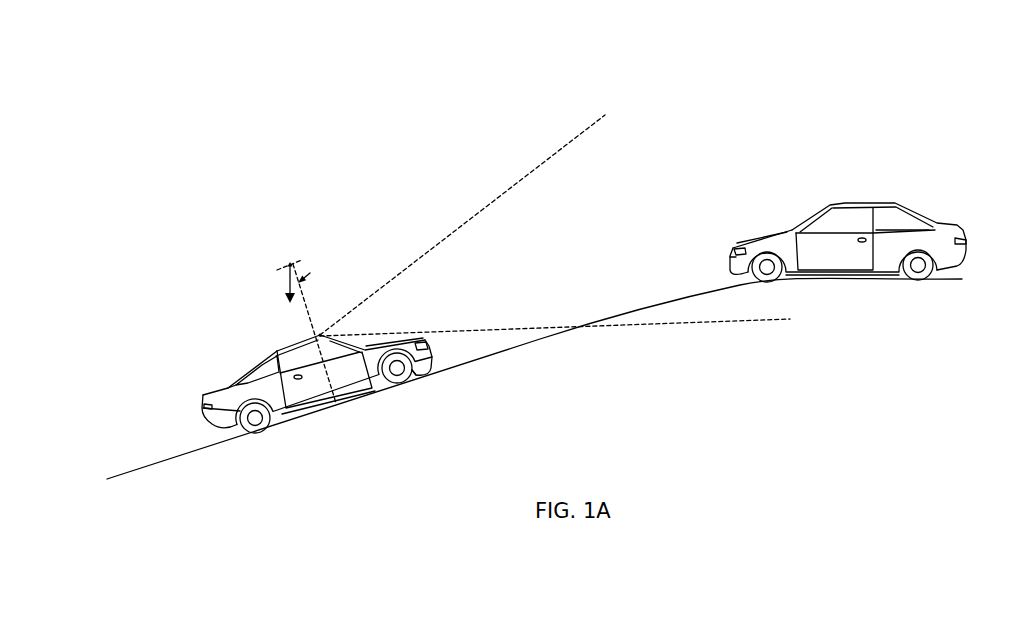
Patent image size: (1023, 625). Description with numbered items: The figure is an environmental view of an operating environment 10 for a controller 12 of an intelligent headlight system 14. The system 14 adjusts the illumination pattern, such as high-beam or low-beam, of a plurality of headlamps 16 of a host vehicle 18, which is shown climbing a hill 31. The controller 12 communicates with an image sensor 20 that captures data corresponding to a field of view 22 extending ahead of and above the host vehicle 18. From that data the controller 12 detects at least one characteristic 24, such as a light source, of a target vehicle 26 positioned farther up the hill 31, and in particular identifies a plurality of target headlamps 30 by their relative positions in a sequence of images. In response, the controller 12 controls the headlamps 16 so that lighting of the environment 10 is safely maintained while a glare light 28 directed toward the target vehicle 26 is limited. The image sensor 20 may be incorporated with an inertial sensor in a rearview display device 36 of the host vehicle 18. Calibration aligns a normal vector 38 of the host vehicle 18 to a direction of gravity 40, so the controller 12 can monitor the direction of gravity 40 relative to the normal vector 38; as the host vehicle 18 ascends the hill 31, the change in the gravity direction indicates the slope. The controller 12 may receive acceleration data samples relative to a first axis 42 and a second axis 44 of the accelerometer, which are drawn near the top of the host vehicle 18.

The operating environment 10 is at (601, 64).
The controller 12 is at (366, 356).
The headlight system 14 is at (482, 371).
The headlamps 16 is at (445, 347).
The host vehicle 18 is at (246, 362).
The image sensor 20 is at (351, 308).
The field of view 22 is at (470, 221).
The characteristic 24 is at (735, 243).
The target vehicle 26 is at (806, 229).
The glare light 28 is at (691, 268).
The target headlamps 30 is at (720, 258).
The hill 31 is at (611, 438).
The rearview display device 36 is at (320, 334).
The normal vector 38 is at (300, 293).
The direction of gravity 40 is at (282, 285).
The first axis 42 is at (309, 318).
The second axis 44 is at (279, 261).